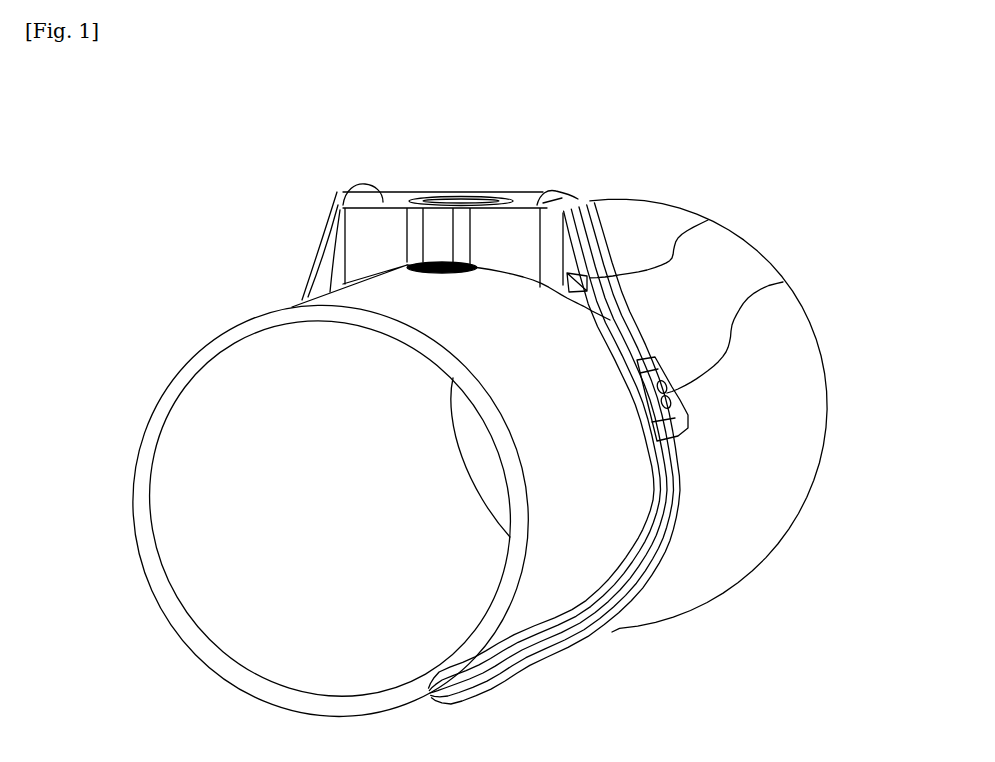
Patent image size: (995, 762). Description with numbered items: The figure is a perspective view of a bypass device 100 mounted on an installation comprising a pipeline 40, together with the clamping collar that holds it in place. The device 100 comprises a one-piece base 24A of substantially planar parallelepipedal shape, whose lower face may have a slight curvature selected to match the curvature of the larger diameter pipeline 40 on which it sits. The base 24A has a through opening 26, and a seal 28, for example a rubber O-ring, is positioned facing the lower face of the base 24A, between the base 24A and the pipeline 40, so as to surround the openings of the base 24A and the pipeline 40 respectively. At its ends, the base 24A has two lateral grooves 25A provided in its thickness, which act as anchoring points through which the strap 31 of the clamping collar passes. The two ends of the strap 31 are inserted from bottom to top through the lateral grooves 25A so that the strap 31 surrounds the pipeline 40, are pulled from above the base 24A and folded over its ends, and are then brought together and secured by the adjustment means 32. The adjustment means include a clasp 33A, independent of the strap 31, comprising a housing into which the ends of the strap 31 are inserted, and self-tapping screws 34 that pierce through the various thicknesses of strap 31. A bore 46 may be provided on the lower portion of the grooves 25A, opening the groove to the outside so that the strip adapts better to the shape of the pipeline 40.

The bypass device 100 is at (506, 108).
The base 24A is at (512, 227).
The lateral grooves 25A is at (590, 200).
The through opening 26 is at (436, 197).
The seal 28 is at (405, 266).
The strap 31 is at (640, 583).
The adjustment means 32 is at (697, 422).
The clasp 33A is at (676, 440).
The self-tapping screws 34 is at (783, 282).
The pipeline 40 is at (797, 408).
The bore 46 is at (700, 220).